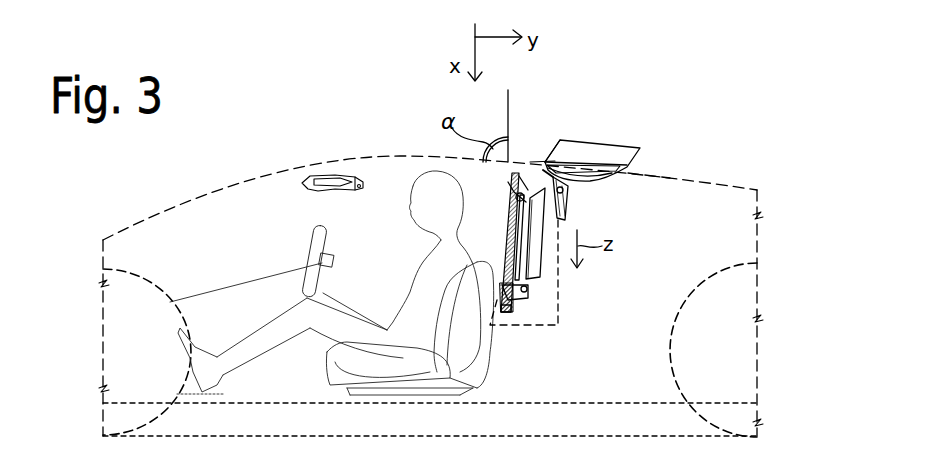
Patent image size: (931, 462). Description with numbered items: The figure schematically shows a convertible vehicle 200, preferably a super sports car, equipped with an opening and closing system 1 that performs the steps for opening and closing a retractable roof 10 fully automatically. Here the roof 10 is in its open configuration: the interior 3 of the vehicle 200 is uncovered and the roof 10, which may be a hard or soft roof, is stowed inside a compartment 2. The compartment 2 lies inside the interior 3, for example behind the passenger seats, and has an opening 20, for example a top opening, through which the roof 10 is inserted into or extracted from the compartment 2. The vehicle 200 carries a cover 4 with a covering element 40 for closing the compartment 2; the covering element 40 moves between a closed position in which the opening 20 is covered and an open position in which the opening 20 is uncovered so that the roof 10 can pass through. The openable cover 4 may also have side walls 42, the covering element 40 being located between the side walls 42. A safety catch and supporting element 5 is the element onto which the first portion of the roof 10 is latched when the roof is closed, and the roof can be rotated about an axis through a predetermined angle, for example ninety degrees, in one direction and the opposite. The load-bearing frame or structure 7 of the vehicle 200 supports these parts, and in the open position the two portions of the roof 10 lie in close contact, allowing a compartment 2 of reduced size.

The opening and closing system 1 is at (603, 115).
The compartment 2 is at (559, 318).
The interior 3 is at (347, 215).
The cover 4 is at (605, 180).
The safety catch and supporting element 5 is at (305, 175).
The frame or structure 7 is at (525, 310).
The retractable roof 10 is at (535, 265).
The opening 20 is at (527, 165).
The covering element 40 is at (613, 146).
The side walls 42 is at (622, 162).
The convertible vehicle 200 is at (778, 245).